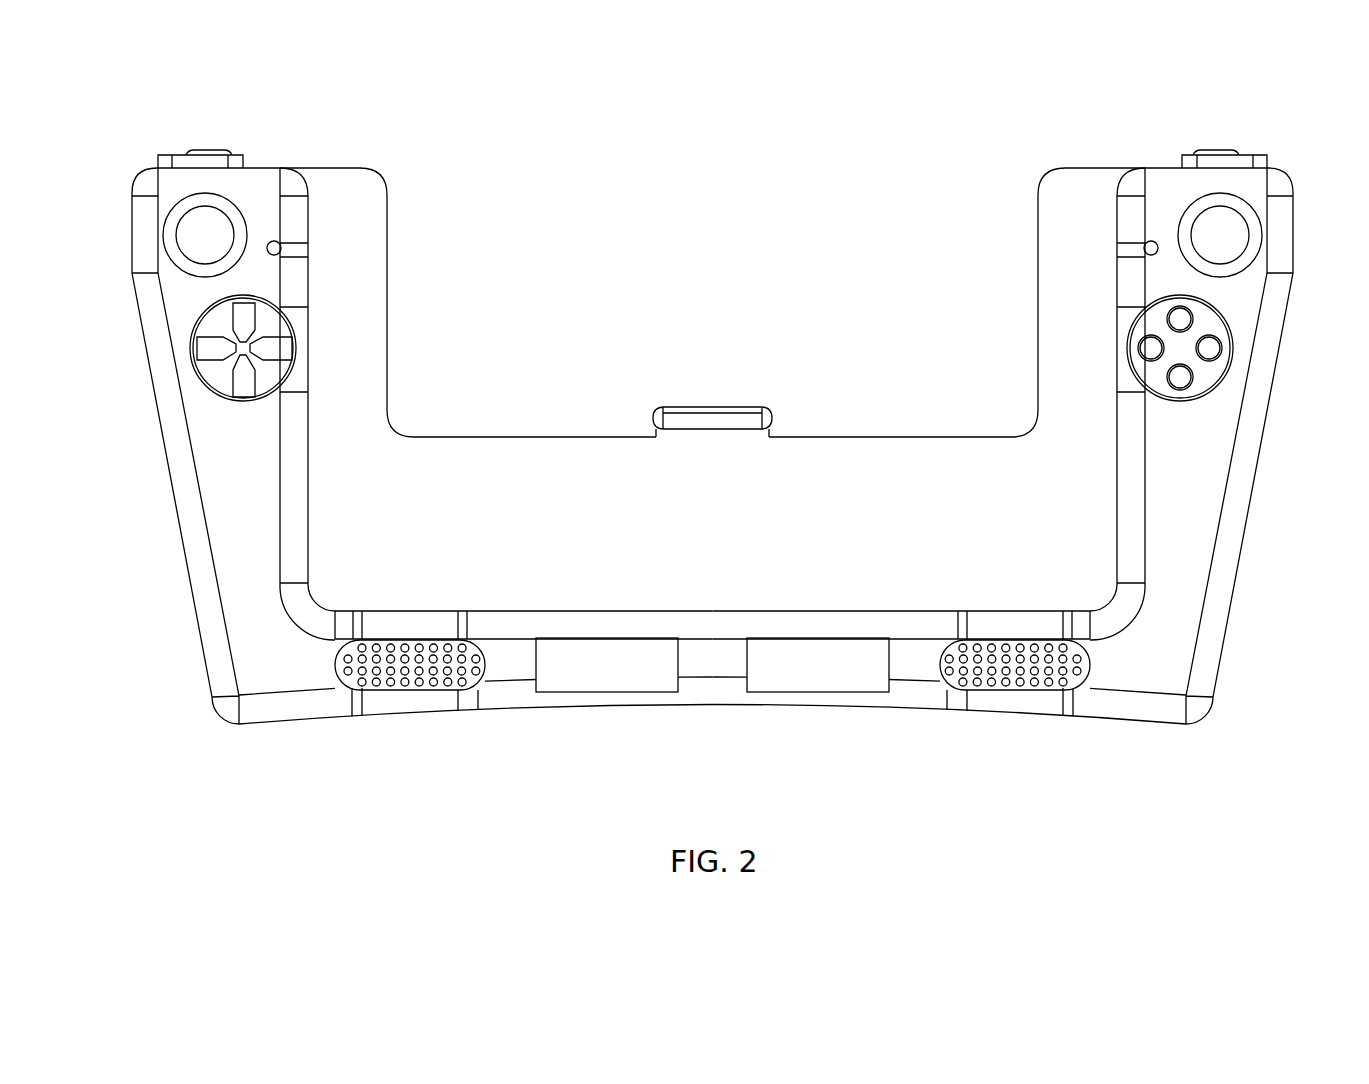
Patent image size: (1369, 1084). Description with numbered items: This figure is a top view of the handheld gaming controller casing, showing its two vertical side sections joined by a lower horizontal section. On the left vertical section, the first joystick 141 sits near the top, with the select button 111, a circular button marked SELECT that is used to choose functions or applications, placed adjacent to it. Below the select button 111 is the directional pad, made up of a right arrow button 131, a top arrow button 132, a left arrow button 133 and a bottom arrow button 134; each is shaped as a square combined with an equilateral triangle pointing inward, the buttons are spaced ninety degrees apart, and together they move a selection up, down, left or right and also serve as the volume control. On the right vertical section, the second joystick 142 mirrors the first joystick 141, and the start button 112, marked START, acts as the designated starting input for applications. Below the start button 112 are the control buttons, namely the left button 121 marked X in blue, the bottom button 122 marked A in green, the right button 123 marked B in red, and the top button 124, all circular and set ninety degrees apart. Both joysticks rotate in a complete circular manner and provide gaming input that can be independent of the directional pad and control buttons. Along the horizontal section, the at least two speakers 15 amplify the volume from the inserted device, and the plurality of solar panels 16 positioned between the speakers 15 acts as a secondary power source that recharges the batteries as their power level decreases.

The first joystick 141 is at (178, 241).
The second joystick 142 is at (1242, 232).
The select button 111 is at (274, 248).
The start button 112 is at (1147, 246).
The right arrow button 131 is at (202, 352).
The top arrow button 132 is at (245, 388).
The left arrow button 133 is at (272, 348).
The bottom arrow button 134 is at (243, 318).
The left button 121 is at (1150, 348).
The bottom button 122 is at (1180, 393).
The right button 123 is at (1210, 348).
The top button 124 is at (1180, 322).
The speakers 15 is at (390, 683).
The solar panels 16 is at (578, 672).